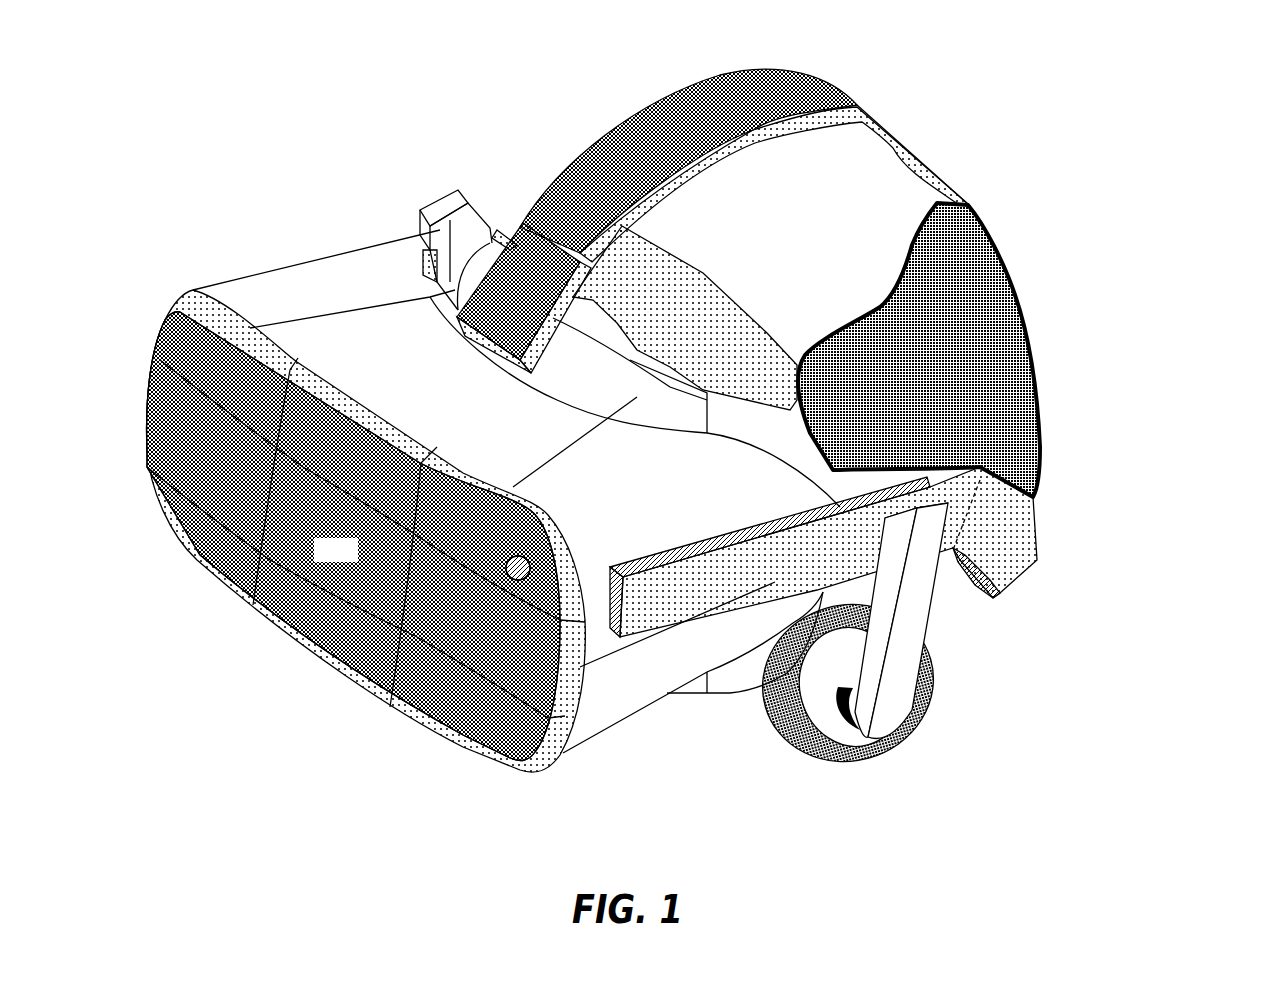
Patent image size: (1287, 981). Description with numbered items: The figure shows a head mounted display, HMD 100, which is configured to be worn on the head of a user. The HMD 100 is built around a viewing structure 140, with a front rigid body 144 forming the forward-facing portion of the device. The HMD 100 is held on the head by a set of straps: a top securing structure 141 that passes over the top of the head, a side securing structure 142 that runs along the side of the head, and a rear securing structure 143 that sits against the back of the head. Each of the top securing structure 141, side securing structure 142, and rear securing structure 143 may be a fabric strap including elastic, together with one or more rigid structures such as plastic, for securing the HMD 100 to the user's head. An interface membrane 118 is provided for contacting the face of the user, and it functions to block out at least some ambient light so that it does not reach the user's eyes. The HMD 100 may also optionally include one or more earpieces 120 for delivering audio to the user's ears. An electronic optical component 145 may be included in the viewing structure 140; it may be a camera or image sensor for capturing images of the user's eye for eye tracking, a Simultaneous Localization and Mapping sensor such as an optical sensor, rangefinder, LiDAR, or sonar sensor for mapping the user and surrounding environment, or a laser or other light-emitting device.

The head mounted display 100 is at (704, 409).
The interface membrane 118 is at (486, 215).
The earpiece 120 is at (918, 732).
The viewing structure 140 is at (516, 491).
The top securing structure 141 is at (812, 86).
The side securing structure 142 is at (700, 272).
The rear securing structure 143 is at (1020, 293).
The front rigid body 144 is at (366, 531).
The electronic optical component 145 is at (522, 556).